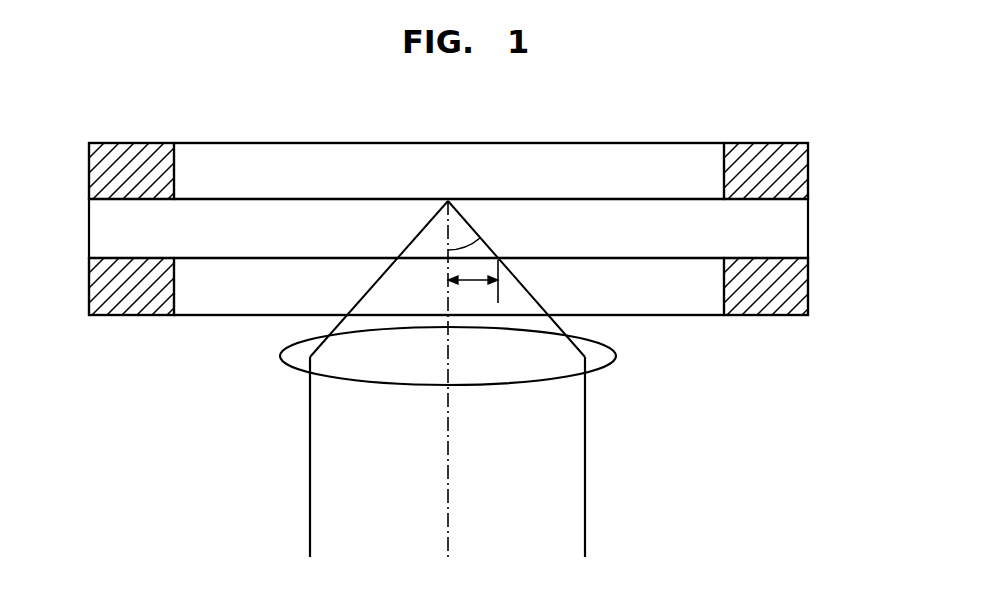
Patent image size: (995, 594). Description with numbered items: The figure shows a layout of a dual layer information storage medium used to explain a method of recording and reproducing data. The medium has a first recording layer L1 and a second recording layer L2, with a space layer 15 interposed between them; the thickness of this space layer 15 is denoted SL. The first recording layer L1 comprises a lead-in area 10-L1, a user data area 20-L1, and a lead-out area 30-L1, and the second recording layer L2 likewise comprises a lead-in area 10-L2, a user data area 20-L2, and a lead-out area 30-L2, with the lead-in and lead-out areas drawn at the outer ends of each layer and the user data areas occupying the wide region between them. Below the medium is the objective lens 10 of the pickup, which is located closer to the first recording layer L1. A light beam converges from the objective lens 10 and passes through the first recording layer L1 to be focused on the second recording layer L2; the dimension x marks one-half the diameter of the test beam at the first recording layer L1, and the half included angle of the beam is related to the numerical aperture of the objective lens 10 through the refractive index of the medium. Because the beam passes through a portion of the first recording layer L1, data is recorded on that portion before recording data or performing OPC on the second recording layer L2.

The lead-in area of second recording layer 10-L2 is at (127, 146).
The user data area of second recording layer 20-L2 is at (257, 156).
The lead-out area of second recording layer 30-L2 is at (765, 144).
The lead-in area of first recording layer 10-L1 is at (125, 302).
The user data area of first recording layer 20-L1 is at (232, 307).
The lead-out area of first recording layer 30-L1 is at (770, 304).
The space layer 15 is at (790, 224).
The objective lens 10 is at (617, 357).
The thickness of space layer SL is at (447, 253).
The first recording layer L1 is at (475, 286).
The second recording layer L2 is at (475, 171).
The one-half diameter of test beam at first recording layer x is at (473, 283).